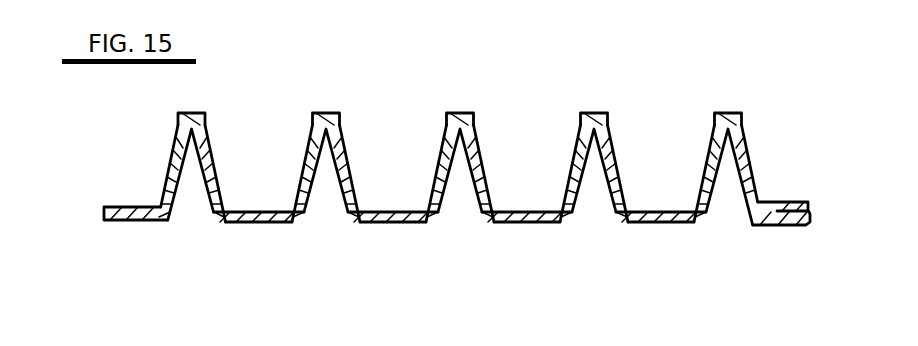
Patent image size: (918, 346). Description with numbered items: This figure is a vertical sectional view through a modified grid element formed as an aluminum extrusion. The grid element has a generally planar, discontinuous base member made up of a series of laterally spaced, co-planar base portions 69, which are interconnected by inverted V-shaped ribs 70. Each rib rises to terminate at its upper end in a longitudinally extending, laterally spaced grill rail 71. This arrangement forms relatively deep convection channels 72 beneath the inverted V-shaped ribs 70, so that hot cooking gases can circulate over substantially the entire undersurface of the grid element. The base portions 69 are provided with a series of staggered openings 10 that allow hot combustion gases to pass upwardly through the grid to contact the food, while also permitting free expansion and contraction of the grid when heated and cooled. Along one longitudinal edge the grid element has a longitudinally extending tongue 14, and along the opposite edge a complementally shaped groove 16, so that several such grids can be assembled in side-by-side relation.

The openings 10 is at (436, 169).
The tongue 14 is at (118, 207).
The groove 16 is at (811, 213).
The base portions 69 is at (250, 223).
The inverted V-shaped ribs 70 is at (296, 166).
The grill rails 71 is at (455, 113).
The convection channels 72 is at (183, 215).